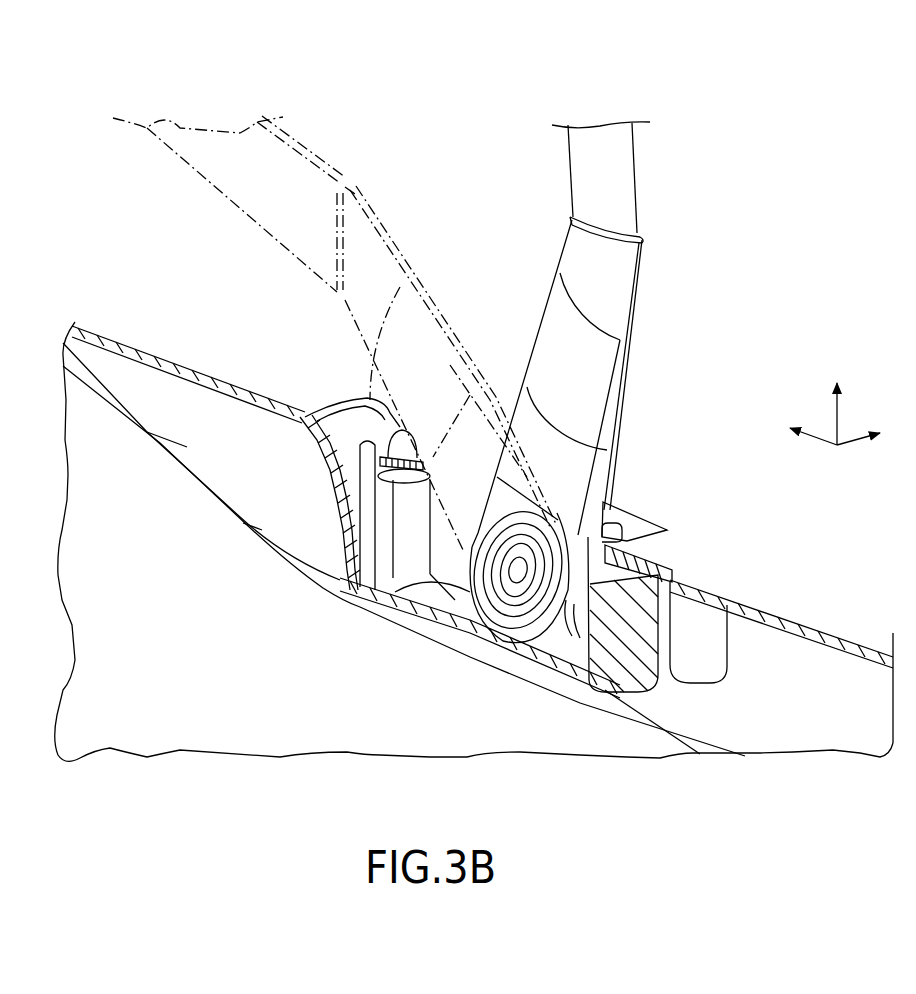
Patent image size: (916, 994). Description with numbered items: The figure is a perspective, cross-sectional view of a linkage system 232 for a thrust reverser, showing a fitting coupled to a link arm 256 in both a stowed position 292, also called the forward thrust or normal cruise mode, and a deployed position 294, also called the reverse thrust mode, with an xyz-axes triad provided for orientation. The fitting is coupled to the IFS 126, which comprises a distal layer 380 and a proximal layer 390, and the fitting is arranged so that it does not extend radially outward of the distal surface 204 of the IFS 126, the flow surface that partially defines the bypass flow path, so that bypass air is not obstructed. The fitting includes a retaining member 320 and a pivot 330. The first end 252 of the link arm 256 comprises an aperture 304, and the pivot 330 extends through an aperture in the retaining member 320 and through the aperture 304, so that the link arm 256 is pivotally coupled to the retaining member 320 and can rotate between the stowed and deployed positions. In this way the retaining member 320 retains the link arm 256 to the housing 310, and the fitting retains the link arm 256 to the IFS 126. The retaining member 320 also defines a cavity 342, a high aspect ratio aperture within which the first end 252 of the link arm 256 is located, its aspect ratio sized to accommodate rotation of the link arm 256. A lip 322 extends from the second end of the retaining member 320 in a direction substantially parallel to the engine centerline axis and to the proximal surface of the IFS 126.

The IFS 126 is at (163, 517).
The distal surface 204 is at (768, 545).
The linkage system 232 is at (813, 192).
The first end 252 is at (627, 500).
The link arm 256 is at (377, 238).
The stowed position 292 is at (640, 292).
The deployed position 294 is at (335, 300).
The aperture 304 is at (522, 612).
The housing 310 is at (718, 655).
The retaining member 320 is at (378, 562).
The lip 322 is at (650, 662).
The pivot 330 is at (510, 580).
The cavity 342 is at (630, 540).
The distal layer 380 is at (150, 358).
The proximal layer 390 is at (150, 434).